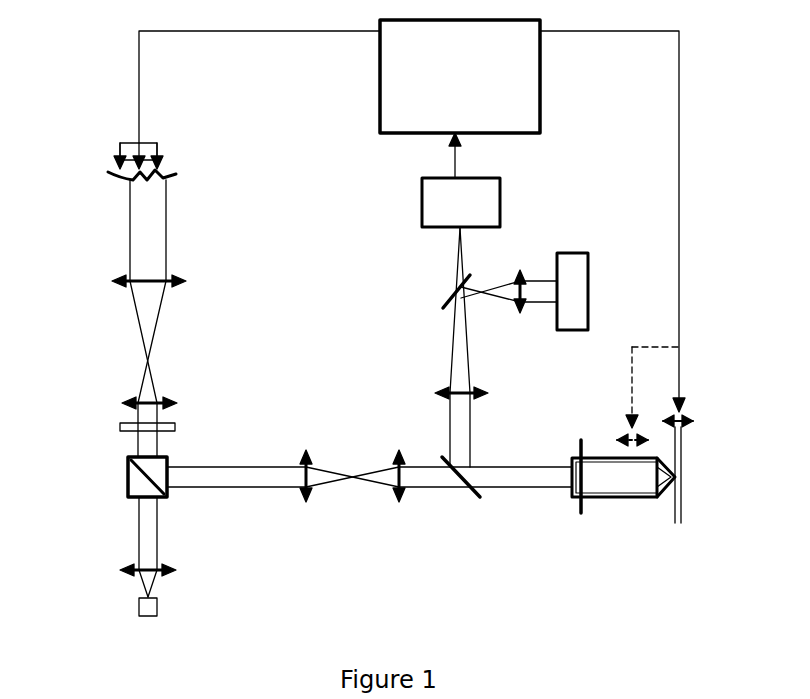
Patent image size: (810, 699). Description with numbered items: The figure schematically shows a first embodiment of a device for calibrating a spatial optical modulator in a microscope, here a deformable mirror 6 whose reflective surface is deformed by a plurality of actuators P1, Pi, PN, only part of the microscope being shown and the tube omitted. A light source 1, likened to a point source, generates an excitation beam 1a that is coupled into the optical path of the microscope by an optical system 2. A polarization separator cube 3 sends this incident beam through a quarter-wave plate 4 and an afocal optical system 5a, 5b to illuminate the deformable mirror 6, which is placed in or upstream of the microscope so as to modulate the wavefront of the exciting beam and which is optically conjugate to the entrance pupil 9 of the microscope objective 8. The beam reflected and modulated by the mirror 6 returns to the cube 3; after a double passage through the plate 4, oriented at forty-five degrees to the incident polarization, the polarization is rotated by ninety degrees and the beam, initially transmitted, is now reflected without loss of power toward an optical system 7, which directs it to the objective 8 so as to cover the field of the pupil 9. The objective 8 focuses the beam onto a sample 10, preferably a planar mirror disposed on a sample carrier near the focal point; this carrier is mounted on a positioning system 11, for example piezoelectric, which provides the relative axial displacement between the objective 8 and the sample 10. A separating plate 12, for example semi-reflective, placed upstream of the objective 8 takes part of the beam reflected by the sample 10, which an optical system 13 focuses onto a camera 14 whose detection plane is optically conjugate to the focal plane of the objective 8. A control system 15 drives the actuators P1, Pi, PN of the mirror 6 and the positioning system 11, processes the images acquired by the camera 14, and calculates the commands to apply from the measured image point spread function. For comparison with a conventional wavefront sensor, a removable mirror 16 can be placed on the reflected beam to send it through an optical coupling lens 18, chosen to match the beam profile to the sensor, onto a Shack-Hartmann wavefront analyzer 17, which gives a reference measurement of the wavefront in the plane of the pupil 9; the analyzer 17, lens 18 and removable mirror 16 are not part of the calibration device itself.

The light source 1 is at (157, 604).
The excitation beam 1a is at (137, 543).
The optical system 2 is at (178, 568).
The polarization separator cube 3 is at (126, 490).
The plate 4 is at (118, 425).
The afocal optical system 5a is at (120, 403).
The afocal optical system 5b is at (110, 282).
The deformable mirror 6 is at (100, 171).
The optical system 7 is at (399, 502).
The microscope objective 8 is at (620, 497).
The entrance pupil 9 is at (578, 513).
The sample 10 is at (683, 497).
The positioning system 11 is at (632, 357).
The separating plate 12 is at (472, 497).
The optical system 13 is at (434, 393).
The camera 14 is at (420, 204).
The control system 15 is at (540, 100).
The removable mirror 16 is at (441, 300).
The wavefront analyzer 17 is at (565, 253).
The optical coupling lens 18 is at (522, 313).
The actuator Pi is at (136, 150).
The actuator P1 is at (118, 150).
The actuator PN is at (160, 150).